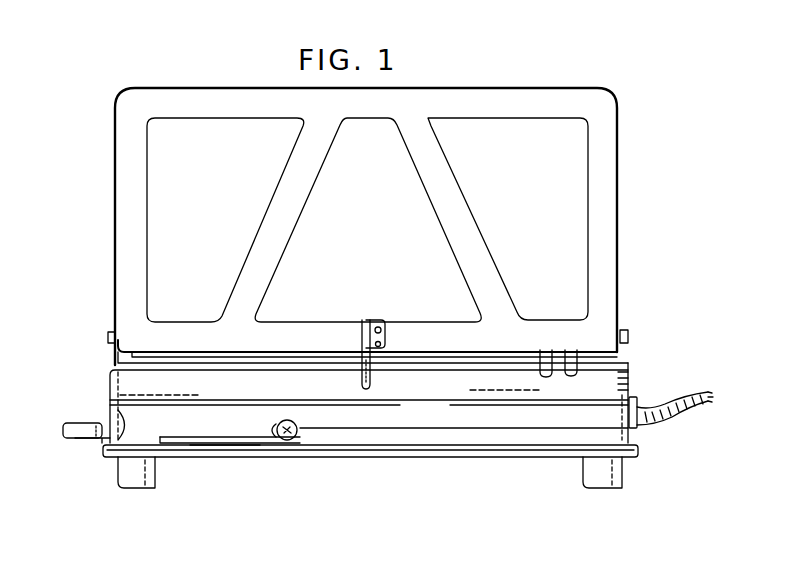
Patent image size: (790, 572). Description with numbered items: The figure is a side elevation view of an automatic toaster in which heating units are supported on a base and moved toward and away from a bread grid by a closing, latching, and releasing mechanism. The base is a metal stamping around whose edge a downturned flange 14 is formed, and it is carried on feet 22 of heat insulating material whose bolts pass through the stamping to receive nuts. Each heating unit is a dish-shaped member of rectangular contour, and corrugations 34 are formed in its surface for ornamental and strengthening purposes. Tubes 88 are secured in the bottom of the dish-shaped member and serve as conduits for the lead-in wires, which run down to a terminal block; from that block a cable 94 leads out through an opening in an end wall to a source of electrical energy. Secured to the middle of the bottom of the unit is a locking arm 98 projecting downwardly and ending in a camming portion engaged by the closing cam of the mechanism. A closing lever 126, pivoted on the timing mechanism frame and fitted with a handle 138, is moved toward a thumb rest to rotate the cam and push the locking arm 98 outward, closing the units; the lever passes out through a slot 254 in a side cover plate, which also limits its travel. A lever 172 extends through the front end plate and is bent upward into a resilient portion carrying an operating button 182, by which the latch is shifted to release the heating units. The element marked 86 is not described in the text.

The corrugations 34 is at (298, 207).
The downturned flange 14 is at (640, 447).
The feet 22 is at (625, 470).
The operating button 182 is at (88, 426).
The lever 172 is at (102, 442).
The slot 254 is at (210, 446).
The closing lever 126 is at (225, 447).
The handle 138 is at (297, 437).
The locking arm 98 is at (372, 356).
The tubes 88 is at (546, 378).
The post 86 is at (556, 378).
The cable 94 is at (669, 399).